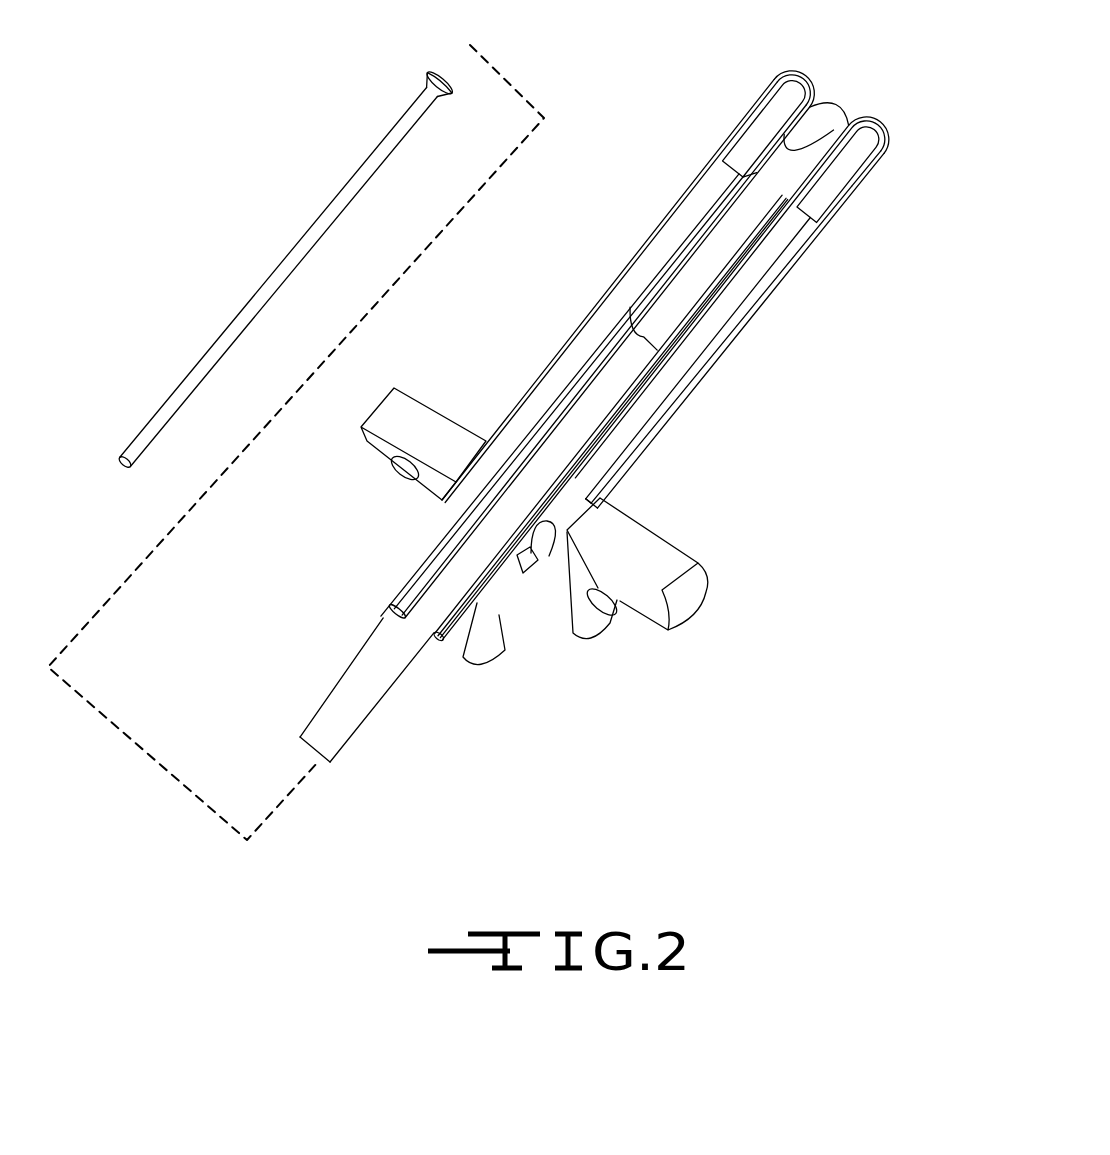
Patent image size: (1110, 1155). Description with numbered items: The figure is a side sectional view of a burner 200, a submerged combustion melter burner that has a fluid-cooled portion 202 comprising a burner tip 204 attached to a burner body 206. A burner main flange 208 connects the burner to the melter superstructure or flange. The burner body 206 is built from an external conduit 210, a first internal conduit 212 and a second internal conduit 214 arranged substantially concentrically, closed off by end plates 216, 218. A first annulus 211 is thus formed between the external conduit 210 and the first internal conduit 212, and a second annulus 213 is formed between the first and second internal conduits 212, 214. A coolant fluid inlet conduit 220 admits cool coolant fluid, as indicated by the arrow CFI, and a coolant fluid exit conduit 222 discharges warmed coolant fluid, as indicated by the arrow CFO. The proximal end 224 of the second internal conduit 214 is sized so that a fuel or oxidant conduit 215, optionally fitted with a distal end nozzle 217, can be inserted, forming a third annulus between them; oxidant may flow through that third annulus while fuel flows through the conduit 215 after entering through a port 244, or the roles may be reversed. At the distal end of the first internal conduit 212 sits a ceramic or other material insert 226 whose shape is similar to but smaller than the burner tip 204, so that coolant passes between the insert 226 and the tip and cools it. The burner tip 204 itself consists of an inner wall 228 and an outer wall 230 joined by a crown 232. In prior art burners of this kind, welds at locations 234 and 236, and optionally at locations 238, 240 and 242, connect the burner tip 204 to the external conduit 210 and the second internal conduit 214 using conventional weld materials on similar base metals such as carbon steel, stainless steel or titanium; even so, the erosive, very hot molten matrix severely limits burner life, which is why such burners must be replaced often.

The burner 200 is at (830, 343).
The fluid-cooled portion 202 is at (660, 223).
The burner tip 204 is at (880, 155).
The burner body 206 is at (723, 353).
The burner main flange 208 is at (664, 530).
The external conduit 210 is at (658, 430).
The first annulus 211 is at (572, 368).
The first internal conduit 212 is at (788, 252).
The second annulus 213 is at (537, 427).
The second internal conduit 214 is at (757, 292).
The fuel or oxidant conduit 215 is at (272, 262).
The end plate 216 is at (515, 567).
The distal end nozzle 217 is at (430, 80).
The end plate 218 is at (433, 640).
The coolant fluid inlet conduit 220 is at (580, 628).
The coolant fluid exit conduit 222 is at (480, 660).
The proximal end 224 is at (335, 693).
The insert 226 is at (867, 118).
The inner wall 228 is at (832, 125).
The outer wall 230 is at (876, 168).
The crown 232 is at (886, 122).
The weld location 234 is at (733, 130).
The weld location 236 is at (700, 183).
The optional weld location 238 is at (640, 328).
The optional weld location 240 is at (765, 90).
The optional weld location 242 is at (828, 120).
The port 244 is at (323, 767).
The arrow indicating warmed coolant fluid egress CFO is at (500, 670).
The arrow indicating cool coolant fluid ingress CFI is at (600, 642).